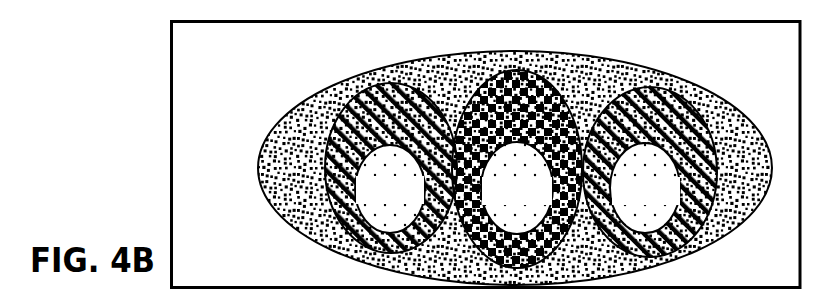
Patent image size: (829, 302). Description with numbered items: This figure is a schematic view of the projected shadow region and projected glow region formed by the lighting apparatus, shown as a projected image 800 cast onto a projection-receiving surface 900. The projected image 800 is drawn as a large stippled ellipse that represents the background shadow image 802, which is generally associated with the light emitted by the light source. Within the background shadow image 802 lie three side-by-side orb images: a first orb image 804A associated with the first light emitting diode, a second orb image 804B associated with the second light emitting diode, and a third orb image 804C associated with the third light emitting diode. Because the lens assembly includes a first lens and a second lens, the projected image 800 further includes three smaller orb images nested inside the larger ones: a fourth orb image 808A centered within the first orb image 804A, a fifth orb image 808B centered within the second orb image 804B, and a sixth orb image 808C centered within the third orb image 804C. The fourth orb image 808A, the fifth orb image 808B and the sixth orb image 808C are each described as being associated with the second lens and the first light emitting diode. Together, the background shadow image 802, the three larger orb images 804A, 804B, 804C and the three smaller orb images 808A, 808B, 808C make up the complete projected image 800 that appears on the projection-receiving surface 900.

The projected image 800 is at (222, 257).
The projection-receiving surface 900 is at (270, 70).
The background shadow image 802 is at (297, 211).
The first orb image 804A is at (361, 110).
The second orb image 804B is at (497, 102).
The third orb image 804C is at (663, 95).
The fourth orb image 808A is at (422, 202).
The fifth orb image 808B is at (550, 203).
The sixth orb image 808C is at (678, 203).